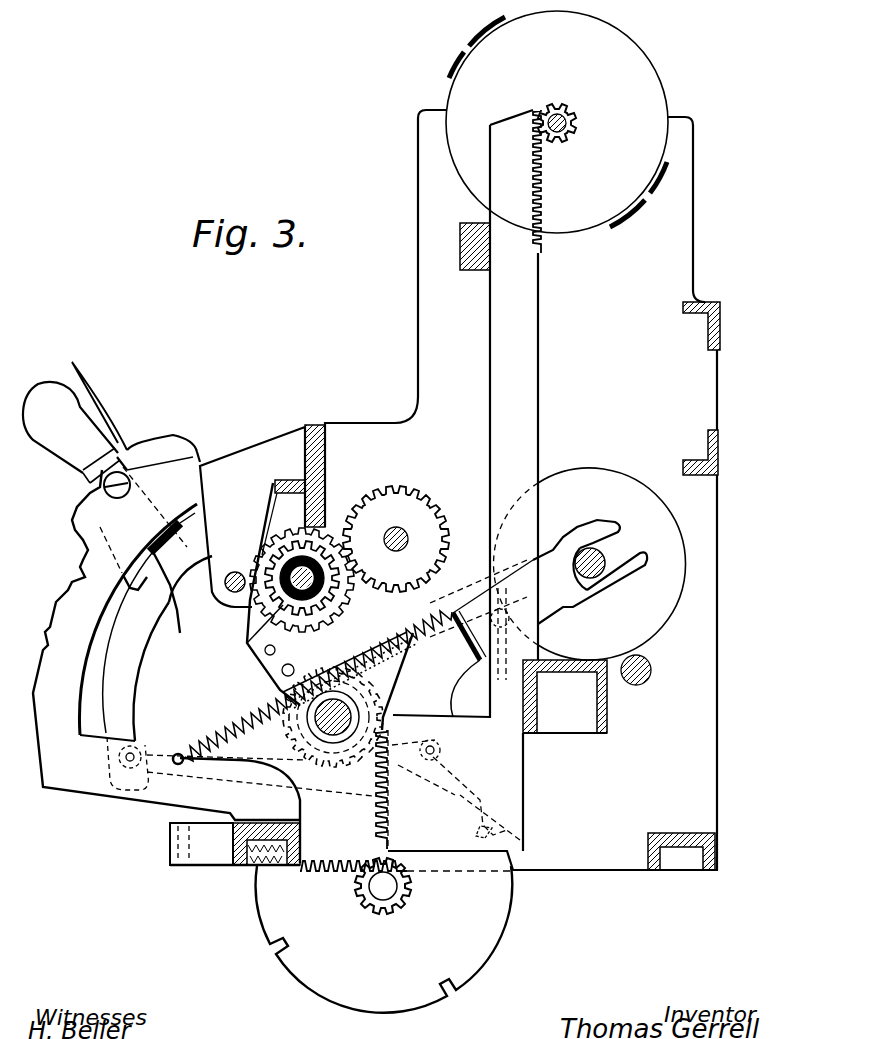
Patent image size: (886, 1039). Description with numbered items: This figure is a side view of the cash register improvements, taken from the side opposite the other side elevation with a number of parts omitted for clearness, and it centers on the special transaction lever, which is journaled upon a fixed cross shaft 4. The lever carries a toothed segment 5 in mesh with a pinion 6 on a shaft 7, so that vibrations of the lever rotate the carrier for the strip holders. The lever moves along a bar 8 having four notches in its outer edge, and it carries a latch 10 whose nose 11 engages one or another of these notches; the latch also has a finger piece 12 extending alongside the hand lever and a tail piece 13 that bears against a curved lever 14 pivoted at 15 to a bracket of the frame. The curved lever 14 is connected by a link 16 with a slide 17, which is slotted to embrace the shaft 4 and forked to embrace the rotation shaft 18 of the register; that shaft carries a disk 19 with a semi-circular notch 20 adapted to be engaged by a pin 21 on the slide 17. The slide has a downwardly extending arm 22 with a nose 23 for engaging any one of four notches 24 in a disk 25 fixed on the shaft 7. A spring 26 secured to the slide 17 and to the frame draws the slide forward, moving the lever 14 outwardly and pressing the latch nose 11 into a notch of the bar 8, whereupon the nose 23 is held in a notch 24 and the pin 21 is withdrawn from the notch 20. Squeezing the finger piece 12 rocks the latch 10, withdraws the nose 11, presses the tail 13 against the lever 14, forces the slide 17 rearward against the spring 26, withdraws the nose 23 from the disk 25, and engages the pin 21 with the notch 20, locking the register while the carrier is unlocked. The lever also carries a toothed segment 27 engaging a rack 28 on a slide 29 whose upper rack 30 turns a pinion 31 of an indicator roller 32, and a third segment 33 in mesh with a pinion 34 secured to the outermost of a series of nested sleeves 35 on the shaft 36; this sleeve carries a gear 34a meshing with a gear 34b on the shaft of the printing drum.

The fixed cross shaft 4 is at (365, 690).
The toothed segment 5 is at (330, 860).
The pinion 6 is at (375, 908).
The shaft 7 is at (392, 890).
The bar 8 is at (72, 582).
The latch 10 is at (95, 491).
The nose 11 is at (195, 448).
The finger piece 12 is at (105, 400).
The tail piece 13 is at (160, 620).
The curved lever 14 is at (125, 657).
The pivot 15 is at (236, 570).
The link 16 is at (165, 805).
The slide 17 is at (470, 605).
The rotation shaft 18 is at (533, 560).
The disk 19 is at (655, 618).
The semi-circular notch 20 is at (527, 598).
The pin 21 is at (520, 672).
The downwardly extending arm 22 is at (520, 815).
The nose 23 is at (517, 840).
The notches 24 is at (462, 1000).
The disk 25 is at (485, 938).
The spring 26 is at (240, 735).
The toothed segment 27 is at (392, 712).
The rack 28 is at (390, 806).
The slide 29 is at (510, 750).
The rack 30 is at (530, 218).
The pinion 31 is at (572, 114).
The indicator roller 32 is at (652, 108).
The third segment 33 is at (349, 670).
The pinion 34 is at (290, 605).
The gear 34a is at (350, 600).
The gear 34b is at (420, 508).
The nested sleeves 35 is at (322, 530).
The shaft 36 is at (250, 650).